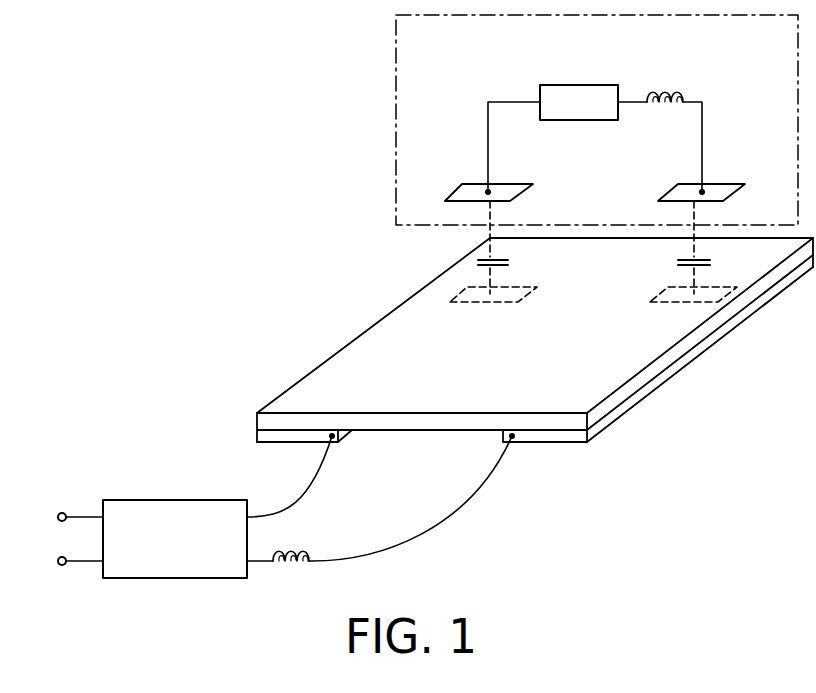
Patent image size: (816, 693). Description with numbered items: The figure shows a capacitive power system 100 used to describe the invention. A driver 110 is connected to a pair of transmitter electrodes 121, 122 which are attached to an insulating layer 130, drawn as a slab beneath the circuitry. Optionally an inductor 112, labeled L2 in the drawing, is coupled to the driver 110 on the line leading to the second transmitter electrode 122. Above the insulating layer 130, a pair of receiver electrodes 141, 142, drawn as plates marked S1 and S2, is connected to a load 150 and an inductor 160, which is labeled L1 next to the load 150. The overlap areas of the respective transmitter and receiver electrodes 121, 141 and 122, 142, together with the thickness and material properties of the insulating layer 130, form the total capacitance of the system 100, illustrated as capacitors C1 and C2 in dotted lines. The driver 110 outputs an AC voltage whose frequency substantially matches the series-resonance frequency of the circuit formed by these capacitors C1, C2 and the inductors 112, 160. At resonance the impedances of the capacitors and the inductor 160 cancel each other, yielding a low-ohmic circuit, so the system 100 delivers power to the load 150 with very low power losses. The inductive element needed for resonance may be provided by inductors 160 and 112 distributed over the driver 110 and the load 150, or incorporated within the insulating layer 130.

The capacitive power system 100 is at (186, 131).
The driver 110 is at (135, 500).
The inductor 112 is at (290, 571).
The transmitter electrode 121 is at (278, 437).
The transmitter electrode 122 is at (565, 437).
The insulating layer 130 is at (637, 385).
The receiver electrode 141 is at (478, 190).
The receiver electrode 142 is at (722, 190).
The load 150 is at (580, 85).
The inductor 160 is at (662, 106).
The first switch plate S1 is at (427, 197).
The second switch plate S2 is at (767, 197).
The capacitor C1 is at (497, 251).
The capacitor C2 is at (698, 251).
The first inductor L1 is at (663, 77).
The second inductor L2 is at (293, 535).